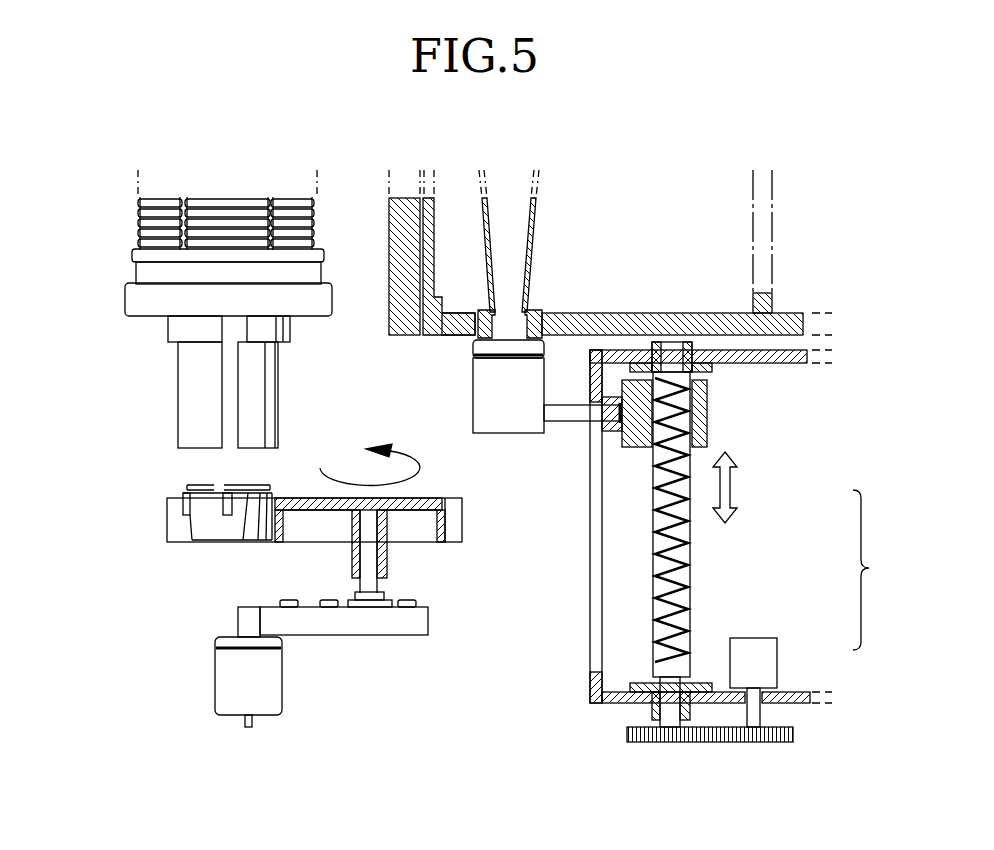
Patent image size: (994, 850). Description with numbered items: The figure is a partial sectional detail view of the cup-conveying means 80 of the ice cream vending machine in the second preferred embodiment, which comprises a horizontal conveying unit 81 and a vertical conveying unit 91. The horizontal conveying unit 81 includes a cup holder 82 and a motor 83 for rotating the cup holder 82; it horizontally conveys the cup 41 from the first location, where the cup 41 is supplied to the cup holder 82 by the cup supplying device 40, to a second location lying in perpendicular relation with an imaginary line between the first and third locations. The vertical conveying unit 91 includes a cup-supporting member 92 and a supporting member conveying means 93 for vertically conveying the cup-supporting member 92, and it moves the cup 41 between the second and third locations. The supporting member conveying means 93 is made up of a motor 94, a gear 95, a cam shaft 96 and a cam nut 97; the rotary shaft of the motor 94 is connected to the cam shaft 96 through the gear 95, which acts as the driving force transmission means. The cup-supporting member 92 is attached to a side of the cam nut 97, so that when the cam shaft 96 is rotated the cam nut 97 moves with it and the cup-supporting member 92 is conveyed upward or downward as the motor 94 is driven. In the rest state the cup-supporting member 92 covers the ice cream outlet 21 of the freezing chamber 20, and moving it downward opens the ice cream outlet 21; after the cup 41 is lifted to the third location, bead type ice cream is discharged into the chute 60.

The freezing chamber 20 is at (658, 326).
The ice cream outlet 21 is at (485, 360).
The cup supplying device 40 is at (125, 295).
The cup 41 is at (197, 528).
The chute 60 is at (530, 213).
The cup-conveying means 80 is at (548, 766).
The horizontal conveying unit 81 is at (440, 672).
The cup holder 82 is at (328, 505).
The motor 83 is at (228, 668).
The vertical conveying unit 91 is at (544, 672).
The cup-supporting member 92 is at (509, 420).
The supporting member conveying means 93 is at (743, 526).
The motor 94 is at (747, 645).
The gear 95 is at (785, 733).
The cam shaft 96 is at (685, 545).
The cam nut 97 is at (707, 424).